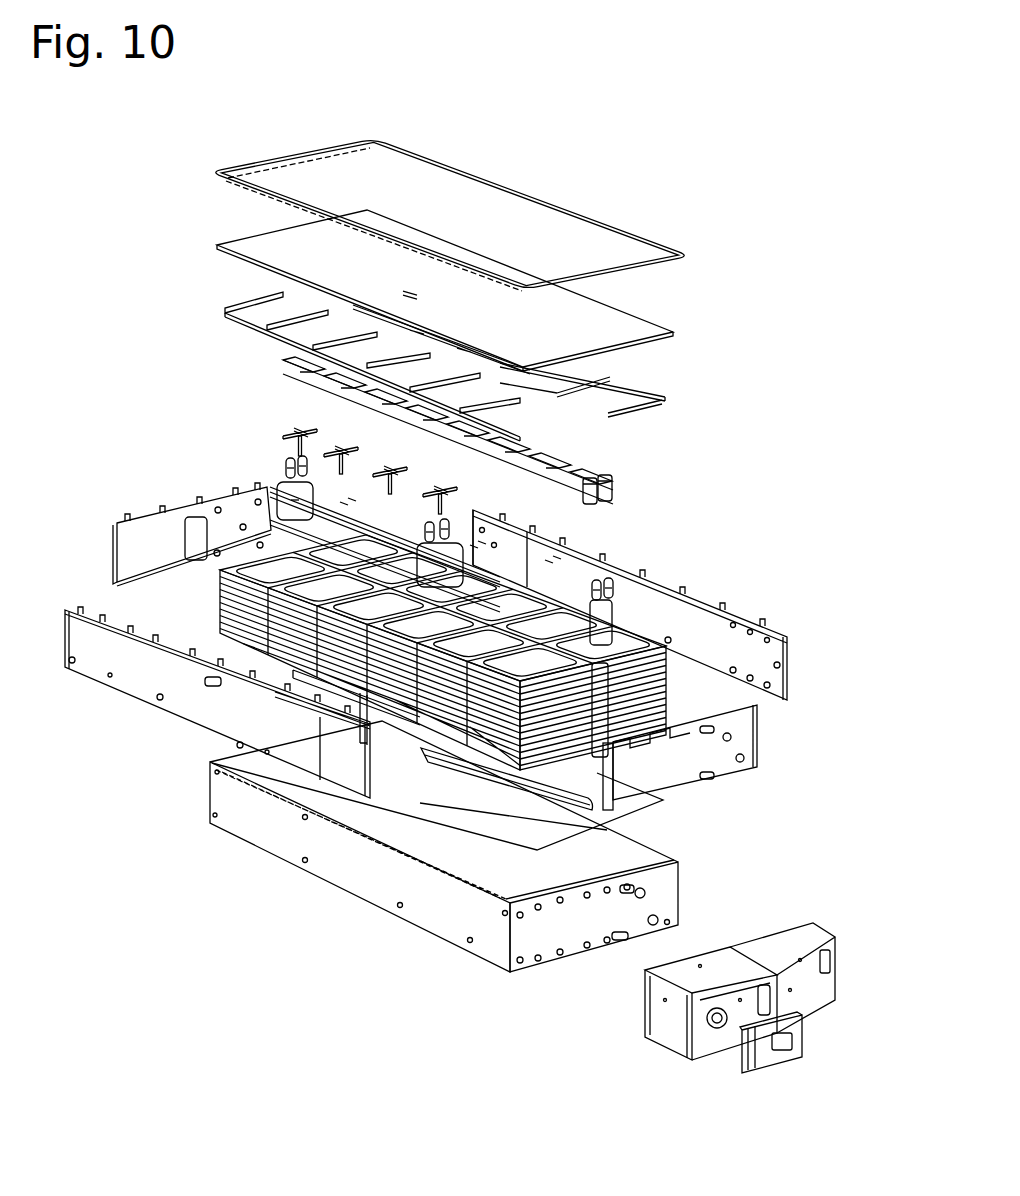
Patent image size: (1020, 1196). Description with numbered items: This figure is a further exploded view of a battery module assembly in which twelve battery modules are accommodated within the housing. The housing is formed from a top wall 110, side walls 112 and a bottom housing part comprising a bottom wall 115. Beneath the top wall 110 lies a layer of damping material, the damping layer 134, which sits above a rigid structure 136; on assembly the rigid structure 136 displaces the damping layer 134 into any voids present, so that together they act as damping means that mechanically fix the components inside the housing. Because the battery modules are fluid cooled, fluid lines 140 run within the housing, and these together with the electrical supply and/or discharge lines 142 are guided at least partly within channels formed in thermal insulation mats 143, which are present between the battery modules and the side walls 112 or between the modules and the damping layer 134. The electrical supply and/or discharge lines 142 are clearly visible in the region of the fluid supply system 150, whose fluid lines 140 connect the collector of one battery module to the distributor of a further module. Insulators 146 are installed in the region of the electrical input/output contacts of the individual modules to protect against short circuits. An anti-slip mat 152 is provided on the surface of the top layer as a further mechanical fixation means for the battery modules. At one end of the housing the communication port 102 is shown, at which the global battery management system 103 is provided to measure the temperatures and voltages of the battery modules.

The top wall 110 is at (560, 227).
The damping layer 134 is at (607, 318).
The rigid structure 136 is at (243, 300).
The insulators 146 is at (615, 490).
The fluid supply system 150 is at (287, 495).
The electrical supply and/or discharge lines 142 is at (297, 433).
The fluid lines 140 is at (547, 570).
The thermal insulation mats 143 is at (143, 547).
The anti-slip mat 152 is at (458, 795).
The bottom wall 115 is at (424, 910).
The side walls 112 is at (657, 907).
The communication port 102 is at (670, 1032).
The global battery management system 103 is at (768, 1057).